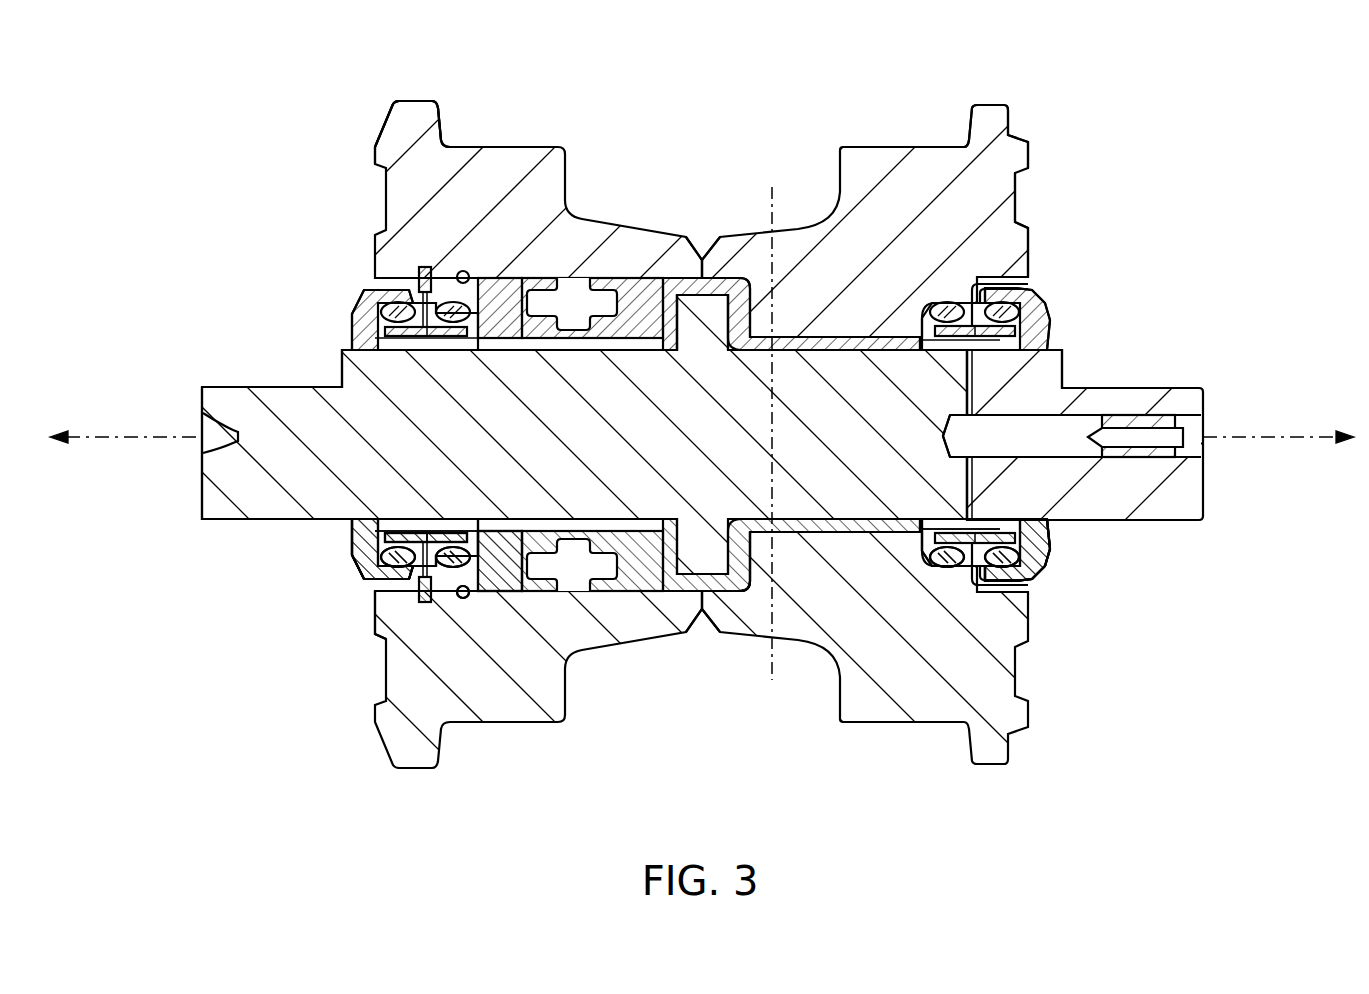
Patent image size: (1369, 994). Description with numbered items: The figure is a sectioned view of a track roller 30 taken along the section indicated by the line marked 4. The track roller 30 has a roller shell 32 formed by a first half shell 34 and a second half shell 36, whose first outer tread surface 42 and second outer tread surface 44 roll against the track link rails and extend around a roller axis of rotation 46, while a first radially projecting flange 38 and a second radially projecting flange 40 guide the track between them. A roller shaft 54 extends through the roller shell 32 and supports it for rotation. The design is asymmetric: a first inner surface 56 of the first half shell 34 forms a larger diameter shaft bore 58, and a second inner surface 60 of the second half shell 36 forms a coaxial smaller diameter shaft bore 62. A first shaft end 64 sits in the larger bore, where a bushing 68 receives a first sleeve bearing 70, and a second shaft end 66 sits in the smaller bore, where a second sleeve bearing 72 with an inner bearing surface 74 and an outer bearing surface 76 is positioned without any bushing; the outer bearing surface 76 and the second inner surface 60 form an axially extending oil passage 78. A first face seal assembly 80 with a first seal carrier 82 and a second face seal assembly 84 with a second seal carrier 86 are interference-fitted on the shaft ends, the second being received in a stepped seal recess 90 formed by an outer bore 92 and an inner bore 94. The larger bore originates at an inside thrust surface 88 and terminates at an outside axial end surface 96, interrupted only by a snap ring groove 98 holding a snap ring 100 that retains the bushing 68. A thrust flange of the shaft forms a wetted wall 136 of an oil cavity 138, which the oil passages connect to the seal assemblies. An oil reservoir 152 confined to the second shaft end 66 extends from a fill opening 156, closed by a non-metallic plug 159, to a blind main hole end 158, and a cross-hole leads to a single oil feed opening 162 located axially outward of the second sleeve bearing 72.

The section line 4- 4 is at (790, 680).
The track roller 30 is at (1126, 126).
The roller shell 32 is at (388, 111).
The first half shell 34 is at (480, 160).
The second half shell 36 is at (925, 160).
The first radially projecting flange 38 is at (418, 101).
The second radially projecting flange 40 is at (987, 104).
The first outer tread surface 42 is at (540, 147).
The second outer tread surface 44 is at (868, 147).
The roller axis of rotation 46 is at (1250, 440).
The roller shaft 54 is at (218, 525).
The first inner surface 56 is at (596, 280).
The larger diameter shaft bore 58 is at (592, 592).
The second inner surface 60 is at (790, 538).
The smaller diameter shaft bore 62 is at (900, 535).
The first shaft end 64 is at (393, 387).
The second shaft end 66 is at (1062, 360).
The bushing 68 is at (500, 586).
The first sleeve bearing 70 is at (606, 519).
The second sleeve bearing 72 is at (772, 355).
The inner bearing surface 74 is at (882, 519).
The outer bearing surface 76 is at (872, 337).
The axially extending oil passage 78 is at (798, 337).
The first face seal assembly 80 is at (342, 563).
The first seal carrier 82 is at (365, 290).
The second face seal assembly 84 is at (1072, 276).
The second seal carrier 86 is at (1046, 555).
The inside thrust surface 88 is at (742, 555).
The seal recess 90 is at (1022, 277).
The outer bore 92 is at (1032, 592).
The inner bore 94 is at (945, 565).
The outside axial end surface 96 is at (372, 634).
The snap ring groove 98 is at (418, 602).
The snap ring 100 is at (425, 267).
The wetted wall 136 is at (702, 258).
The oil cavity 138 is at (702, 612).
The oil reservoir 152 is at (1067, 472).
The fill opening 156 is at (1204, 398).
The main hole end 158 is at (949, 440).
The plug 159 is at (1143, 410).
The oil feed opening 162 is at (965, 372).